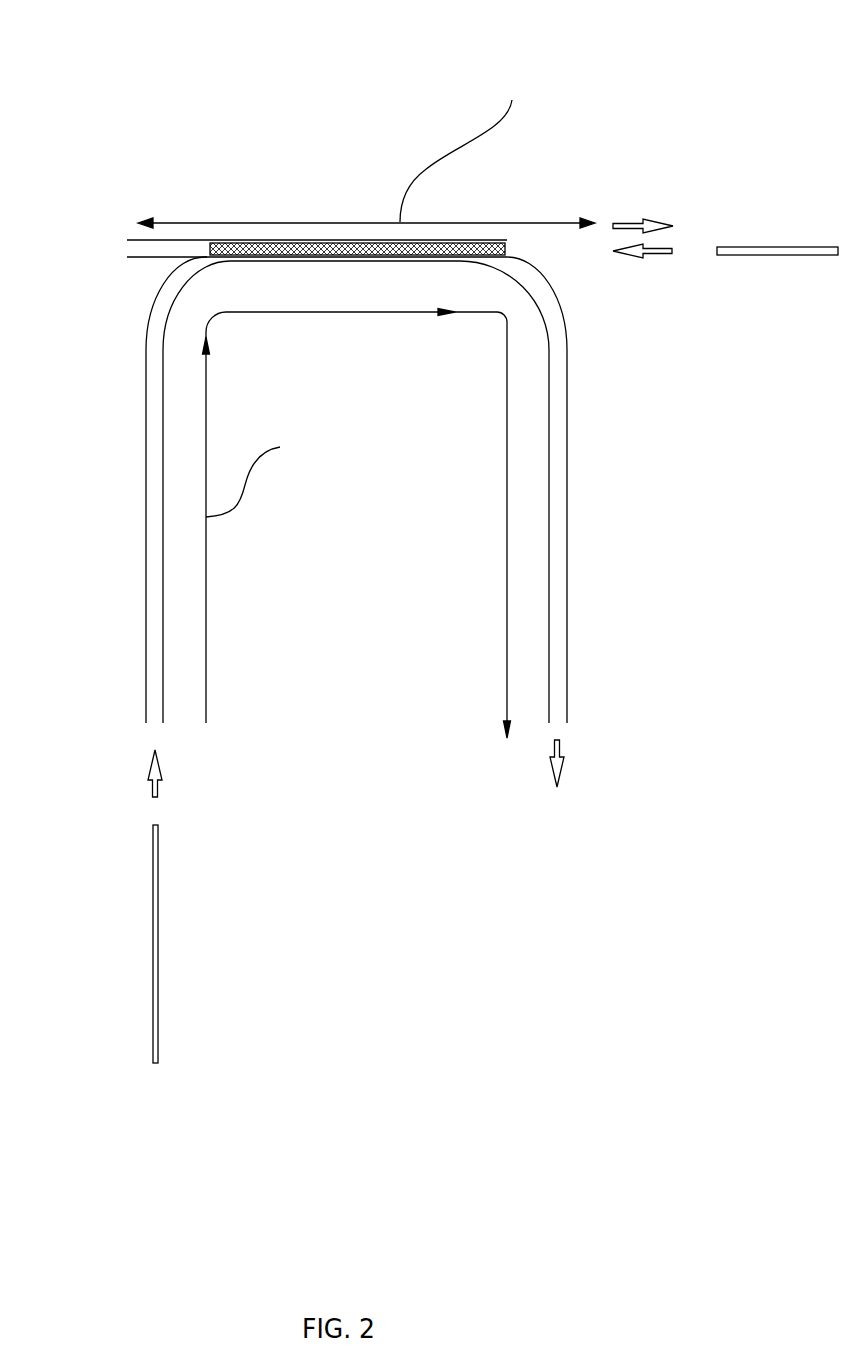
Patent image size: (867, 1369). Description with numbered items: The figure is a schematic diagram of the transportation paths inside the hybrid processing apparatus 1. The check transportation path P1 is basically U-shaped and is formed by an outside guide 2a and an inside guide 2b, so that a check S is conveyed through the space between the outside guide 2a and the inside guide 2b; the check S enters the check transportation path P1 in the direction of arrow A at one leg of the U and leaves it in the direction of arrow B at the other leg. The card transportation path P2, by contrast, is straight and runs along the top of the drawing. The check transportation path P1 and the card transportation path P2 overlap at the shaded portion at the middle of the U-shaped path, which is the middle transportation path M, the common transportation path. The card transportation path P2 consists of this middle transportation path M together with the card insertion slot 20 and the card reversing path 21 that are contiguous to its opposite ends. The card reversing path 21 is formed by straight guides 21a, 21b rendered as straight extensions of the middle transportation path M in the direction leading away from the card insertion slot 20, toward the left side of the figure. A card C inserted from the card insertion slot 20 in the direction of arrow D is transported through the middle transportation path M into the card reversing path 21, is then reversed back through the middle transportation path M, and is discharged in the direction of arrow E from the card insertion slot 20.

The hybrid processing apparatus 1 is at (404, 371).
The outside guide 2a is at (146, 544).
The inside guide 2b is at (163, 658).
The card insertion slot 20 is at (513, 249).
The card reversing path 21 is at (316, 262).
The straight guide 21a is at (133, 239).
The straight guide 21b is at (145, 260).
The middle transportation path M is at (263, 243).
The check transportation path P1 is at (155, 613).
The card transportation path P2 is at (500, 240).
The card discharge direction E is at (630, 220).
The card insertion direction D is at (660, 255).
The card C is at (790, 247).
The check insertion direction A is at (150, 784).
The check discharge direction B is at (562, 750).
The check S is at (158, 943).